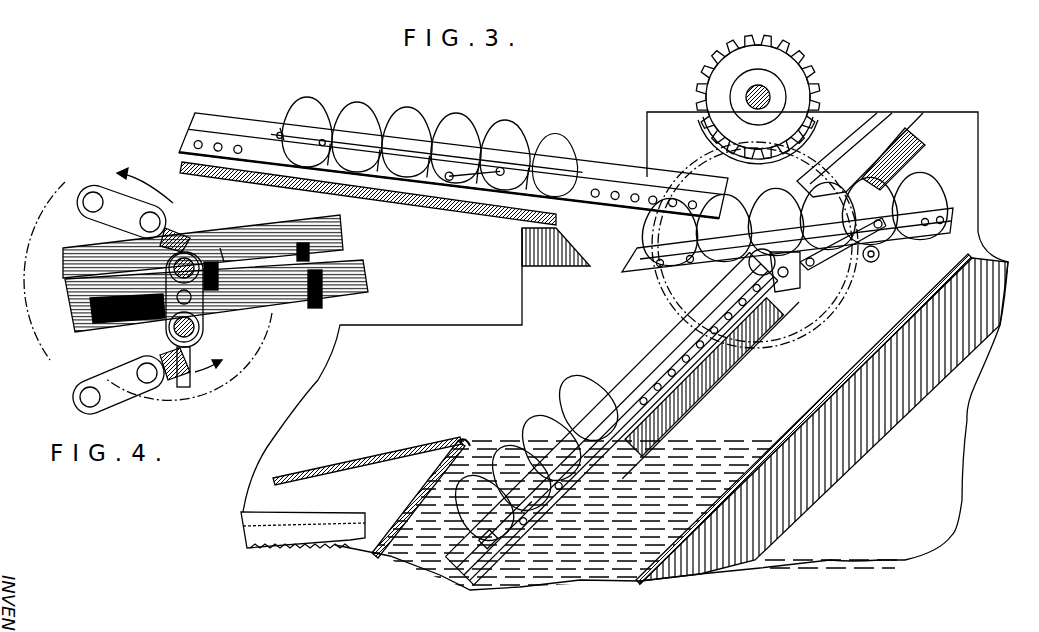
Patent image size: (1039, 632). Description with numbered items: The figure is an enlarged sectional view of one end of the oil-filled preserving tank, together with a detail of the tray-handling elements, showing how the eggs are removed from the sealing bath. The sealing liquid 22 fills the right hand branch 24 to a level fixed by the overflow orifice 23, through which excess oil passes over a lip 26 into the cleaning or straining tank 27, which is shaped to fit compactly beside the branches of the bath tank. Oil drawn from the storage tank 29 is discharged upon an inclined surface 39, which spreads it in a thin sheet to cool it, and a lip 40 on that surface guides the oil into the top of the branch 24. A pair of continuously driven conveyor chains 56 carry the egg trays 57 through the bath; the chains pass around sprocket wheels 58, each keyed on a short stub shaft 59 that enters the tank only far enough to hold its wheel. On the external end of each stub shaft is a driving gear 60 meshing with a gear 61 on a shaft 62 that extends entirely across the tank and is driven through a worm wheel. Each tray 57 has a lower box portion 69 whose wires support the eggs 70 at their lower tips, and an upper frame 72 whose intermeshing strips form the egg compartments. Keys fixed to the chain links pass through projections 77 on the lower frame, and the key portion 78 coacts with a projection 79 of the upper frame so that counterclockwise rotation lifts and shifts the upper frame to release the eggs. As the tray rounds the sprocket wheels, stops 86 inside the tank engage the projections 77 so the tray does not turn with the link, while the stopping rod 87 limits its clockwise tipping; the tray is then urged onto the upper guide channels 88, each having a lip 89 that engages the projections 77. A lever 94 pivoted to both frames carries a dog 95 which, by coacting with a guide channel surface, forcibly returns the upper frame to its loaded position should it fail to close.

In FIG. 3, the liquid 22 is at (738, 440).
In FIG. 3, the overflow orifice 23 is at (450, 438).
In FIG. 3, the right hand branch 24 is at (690, 485).
In FIG. 3, the lip 26 is at (362, 462).
In FIG. 3, the cleaning or straining tank 27 is at (277, 512).
In FIG. 3, the storage tank 29 is at (894, 495).
In FIG. 3, the inclined surface 39 is at (455, 222).
In FIG. 3, the lip 40 is at (540, 234).
In FIG. 3, the conveyor chains 56 is at (700, 376).
In FIG. 3, the egg tray 57 is at (650, 412).
In FIG. 3, the sprocket wheels 58 is at (782, 272).
In FIG. 4, the sprocket wheels 58 is at (135, 405).
In FIG. 3, the stub shaft 59 is at (762, 253).
In FIG. 3, the driving gear 60 is at (656, 299).
In FIG. 3, the gear 61 is at (800, 108).
In FIG. 3, the shaft 62 is at (776, 97).
In FIG. 3, the box portion 69 is at (249, 136).
In FIG. 4, the box portion 69 is at (345, 250).
In FIG. 3, the eggs 70 is at (312, 108).
In FIG. 4, the eggs 70 is at (355, 270).
In FIG. 3, the upper frame 72 is at (282, 131).
In FIG. 4, the projections 77 is at (232, 300).
In FIG. 4, the key portion 78 is at (192, 352).
In FIG. 4, the projection 79 is at (222, 250).
In FIG. 3, the stops 86 is at (802, 176).
In FIG. 3, the stopping rod 87 is at (876, 260).
In FIG. 3, the upper guide channels 88 is at (607, 210).
In FIG. 3, the lip 89 is at (722, 229).
In FIG. 4, the lever 94 is at (345, 290).
In FIG. 4, the dog 95 is at (302, 300).